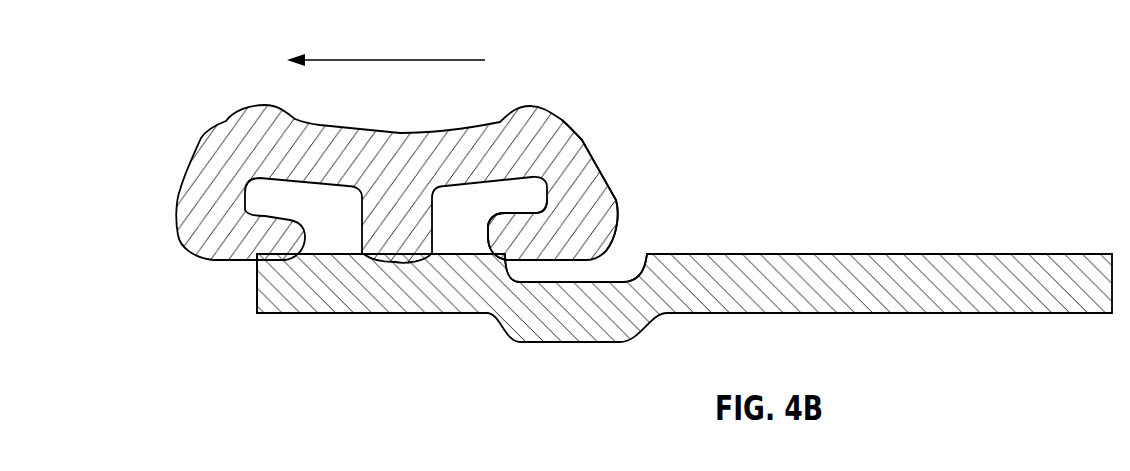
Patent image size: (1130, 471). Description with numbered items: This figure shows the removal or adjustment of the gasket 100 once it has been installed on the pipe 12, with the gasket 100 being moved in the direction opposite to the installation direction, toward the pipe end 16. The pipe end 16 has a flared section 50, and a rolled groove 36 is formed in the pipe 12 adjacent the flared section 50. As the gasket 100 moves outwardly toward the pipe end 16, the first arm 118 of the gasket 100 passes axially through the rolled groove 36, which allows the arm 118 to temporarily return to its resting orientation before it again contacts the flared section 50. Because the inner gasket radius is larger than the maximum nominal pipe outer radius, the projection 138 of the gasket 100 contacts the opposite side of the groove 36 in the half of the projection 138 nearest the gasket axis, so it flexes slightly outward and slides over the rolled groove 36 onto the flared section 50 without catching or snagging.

The gasket 100 is at (239, 90).
The first arm 118 is at (577, 170).
The pipe 12 is at (733, 280).
The pipe end 16 is at (257, 290).
The rolled groove 36 is at (622, 270).
The flared section 50 is at (440, 287).
The projection 138 is at (505, 233).